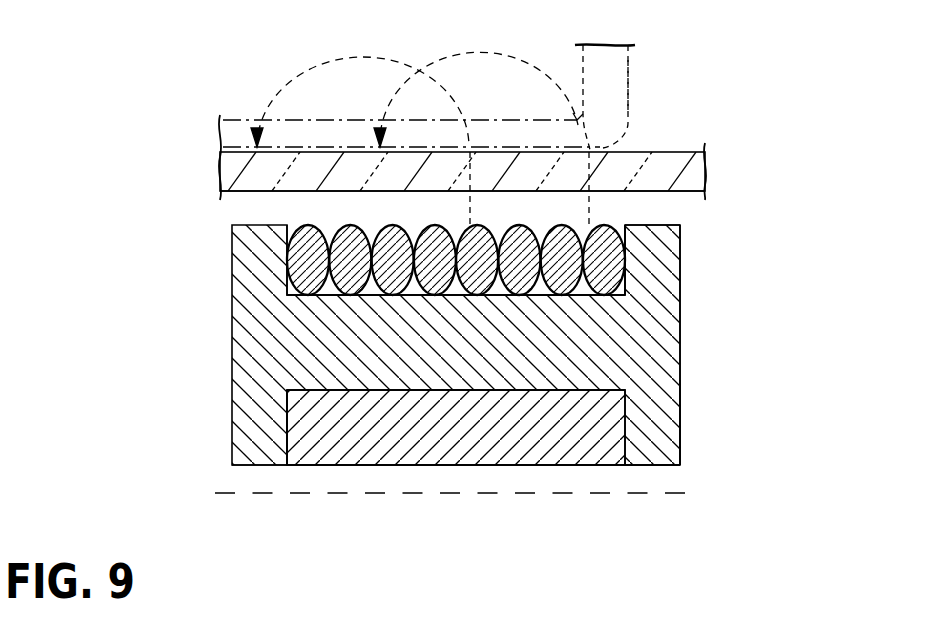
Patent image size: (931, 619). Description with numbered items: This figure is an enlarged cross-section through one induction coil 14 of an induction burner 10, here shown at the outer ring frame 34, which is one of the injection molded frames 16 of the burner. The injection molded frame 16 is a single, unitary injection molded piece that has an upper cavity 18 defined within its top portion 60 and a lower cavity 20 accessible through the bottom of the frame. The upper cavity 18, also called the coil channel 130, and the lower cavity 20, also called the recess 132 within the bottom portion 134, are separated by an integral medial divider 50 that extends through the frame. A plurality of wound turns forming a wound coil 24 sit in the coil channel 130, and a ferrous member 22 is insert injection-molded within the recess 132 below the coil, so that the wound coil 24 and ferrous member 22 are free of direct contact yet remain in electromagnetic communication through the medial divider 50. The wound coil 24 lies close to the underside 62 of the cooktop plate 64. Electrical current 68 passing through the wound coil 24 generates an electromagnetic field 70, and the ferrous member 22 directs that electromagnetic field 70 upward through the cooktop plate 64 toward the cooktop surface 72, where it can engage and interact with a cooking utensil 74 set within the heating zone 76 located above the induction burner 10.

The induction burner 10 is at (122, 107).
The induction coil 14 is at (218, 316).
The injection molded frame 16 is at (635, 340).
The upper cavity 18 is at (626, 220).
The lower cavity 20 is at (308, 470).
The ferrous member 22 is at (495, 440).
The wound coil 24 is at (257, 192).
The outer ring frame 34 is at (690, 393).
The integral medial divider 50 is at (435, 348).
The top portion 60 is at (690, 260).
The underside 62 is at (295, 217).
The cooktop plate 64 is at (235, 165).
The electrical current 68 is at (294, 258).
The electromagnetic field 70 is at (578, 118).
The cooktop surface 72 is at (242, 148).
The cooking utensil 74 is at (612, 112).
The heating zone 76 is at (343, 100).
The coil channel 130 is at (327, 300).
The recess 132 is at (283, 410).
The bottom portion 134 is at (689, 468).